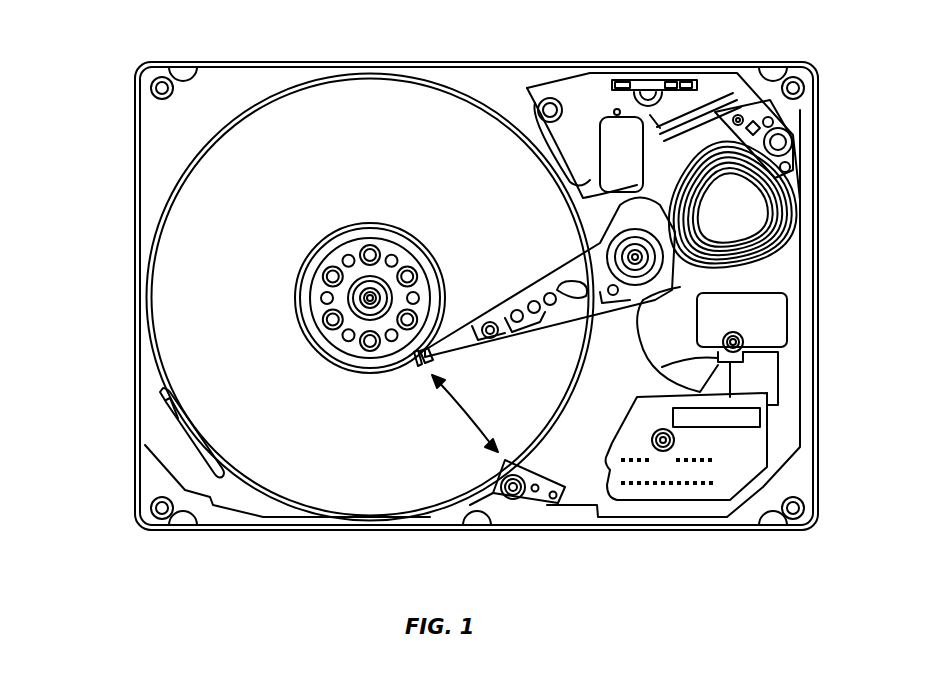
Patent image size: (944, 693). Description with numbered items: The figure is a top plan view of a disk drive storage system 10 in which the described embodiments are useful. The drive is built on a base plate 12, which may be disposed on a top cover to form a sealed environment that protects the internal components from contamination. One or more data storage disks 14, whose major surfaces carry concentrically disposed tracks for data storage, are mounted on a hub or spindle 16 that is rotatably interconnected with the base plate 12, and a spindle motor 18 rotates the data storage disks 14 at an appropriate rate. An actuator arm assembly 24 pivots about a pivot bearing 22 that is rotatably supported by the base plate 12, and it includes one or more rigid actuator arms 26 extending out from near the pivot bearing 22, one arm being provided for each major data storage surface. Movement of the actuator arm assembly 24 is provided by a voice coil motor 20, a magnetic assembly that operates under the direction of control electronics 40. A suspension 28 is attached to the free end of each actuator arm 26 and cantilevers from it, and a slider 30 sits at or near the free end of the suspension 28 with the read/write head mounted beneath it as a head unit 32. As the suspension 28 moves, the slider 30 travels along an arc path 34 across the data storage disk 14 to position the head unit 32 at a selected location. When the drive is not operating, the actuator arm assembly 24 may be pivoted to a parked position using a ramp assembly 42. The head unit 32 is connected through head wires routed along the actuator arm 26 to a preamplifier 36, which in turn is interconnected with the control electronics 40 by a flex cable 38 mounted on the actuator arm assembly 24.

The disk drive storage system 10 is at (126, 124).
The base plate 12 is at (284, 62).
The data storage disk 14 is at (382, 108).
The spindle 16 is at (393, 228).
The spindle motor 18 is at (352, 282).
The voice coil motor 20 is at (742, 218).
The pivot bearing 22 is at (653, 252).
The actuator arm assembly 24 is at (562, 273).
The actuator arm 26 is at (527, 320).
The suspension 28 is at (458, 327).
The slider 30 is at (438, 362).
The head unit 32 is at (414, 366).
The arc path 34 is at (456, 417).
The preamplifier 36 is at (643, 312).
The flex cable 38 is at (700, 388).
The control electronics 40 is at (673, 490).
The ramp assembly 42 is at (540, 500).